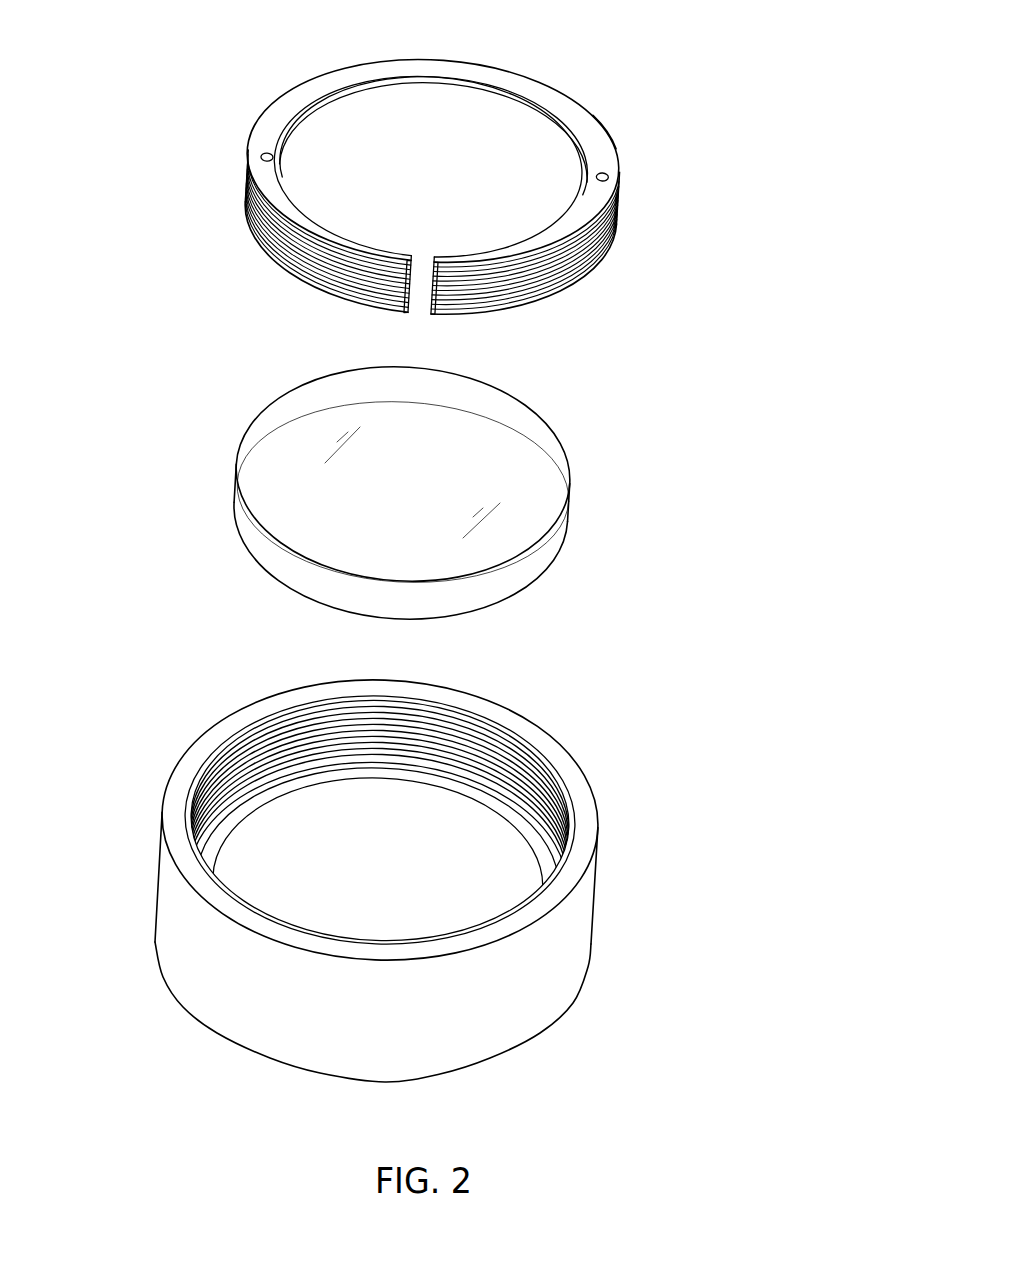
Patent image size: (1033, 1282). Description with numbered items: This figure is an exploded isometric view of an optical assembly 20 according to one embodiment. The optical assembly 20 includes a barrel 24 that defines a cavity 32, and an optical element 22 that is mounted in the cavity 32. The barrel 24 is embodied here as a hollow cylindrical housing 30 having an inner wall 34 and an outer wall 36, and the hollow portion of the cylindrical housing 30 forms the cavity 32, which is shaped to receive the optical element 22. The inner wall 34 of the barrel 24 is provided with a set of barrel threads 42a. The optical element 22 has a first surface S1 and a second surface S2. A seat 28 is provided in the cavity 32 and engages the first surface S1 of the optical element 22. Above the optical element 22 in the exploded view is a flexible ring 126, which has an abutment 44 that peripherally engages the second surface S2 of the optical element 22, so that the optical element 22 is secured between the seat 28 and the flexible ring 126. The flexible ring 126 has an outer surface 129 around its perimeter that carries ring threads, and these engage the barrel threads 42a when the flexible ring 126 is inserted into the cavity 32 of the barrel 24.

The optical assembly 20 is at (732, 182).
The optical element 22 is at (416, 493).
The barrel 24 is at (382, 857).
The seat 28 is at (216, 830).
The hollow cylindrical housing 30 is at (137, 786).
The cavity 32 is at (466, 838).
The inner wall 34 is at (388, 770).
The outer wall 36 is at (173, 878).
The barrel threads 42a is at (320, 727).
The abutment 44 is at (575, 298).
The flexible ring 126 is at (607, 65).
The outer surface 129 is at (600, 128).
The first surface S1 is at (268, 574).
The second surface S2 is at (426, 491).